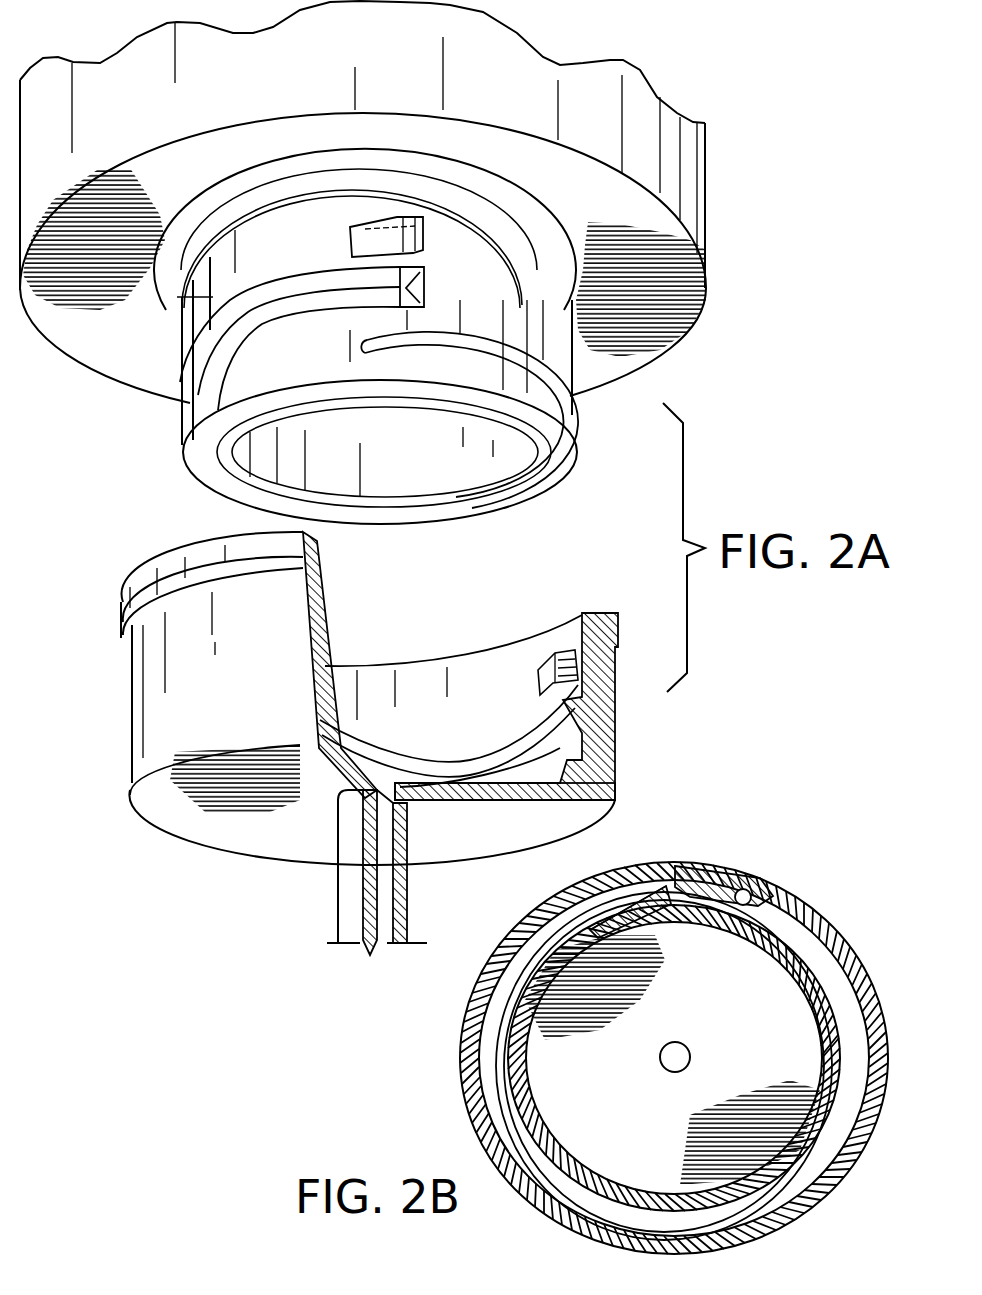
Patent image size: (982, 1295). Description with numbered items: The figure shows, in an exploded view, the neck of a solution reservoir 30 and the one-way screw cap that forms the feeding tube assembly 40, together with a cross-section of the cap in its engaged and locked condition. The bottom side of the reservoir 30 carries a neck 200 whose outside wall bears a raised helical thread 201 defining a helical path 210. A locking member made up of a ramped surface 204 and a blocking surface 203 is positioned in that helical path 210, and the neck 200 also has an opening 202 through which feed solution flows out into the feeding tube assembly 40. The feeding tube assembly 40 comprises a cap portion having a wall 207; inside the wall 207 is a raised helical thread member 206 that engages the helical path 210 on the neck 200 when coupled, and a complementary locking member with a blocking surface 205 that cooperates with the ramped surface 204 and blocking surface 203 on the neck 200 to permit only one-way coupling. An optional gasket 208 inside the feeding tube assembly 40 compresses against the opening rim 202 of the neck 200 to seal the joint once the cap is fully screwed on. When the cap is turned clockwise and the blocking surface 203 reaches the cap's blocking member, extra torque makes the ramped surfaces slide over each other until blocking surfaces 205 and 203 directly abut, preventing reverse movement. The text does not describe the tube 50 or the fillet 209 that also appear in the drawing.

In FIG. 2A, the solution reservoir 30 is at (112, 32).
In FIG. 2A, the feeding tube assembly 40 is at (82, 622).
In FIG. 2A, the tube 50 is at (362, 882).
In FIG. 2A, the neck 200 is at (575, 352).
In FIG. 2B, the neck 200 is at (516, 1113).
In FIG. 2A, the raised helical thread 201 is at (572, 425).
In FIG. 2B, the raised helical thread 201 is at (613, 1212).
In FIG. 2A, the opening 202 is at (468, 470).
In FIG. 2A, the blocking surface 203 is at (417, 250).
In FIG. 2B, the blocking surface 203 is at (628, 870).
In FIG. 2A, the ramped surface 204 is at (398, 218).
In FIG. 2B, the ramped surface 204 is at (668, 890).
In FIG. 2A, the blocking surface 205 is at (618, 656).
In FIG. 2B, the blocking surface 205 is at (670, 888).
In FIG. 2A, the helical thread member 206 is at (552, 660).
In FIG. 2B, the helical thread member 206 is at (772, 890).
In FIG. 2A, the wall 207 is at (616, 757).
In FIG. 2B, the wall 207 is at (466, 1050).
In FIG. 2A, the gasket 208 is at (616, 793).
In FIG. 2A, the fillet 209 is at (565, 734).
In FIG. 2A, the helical path 210 is at (200, 398).